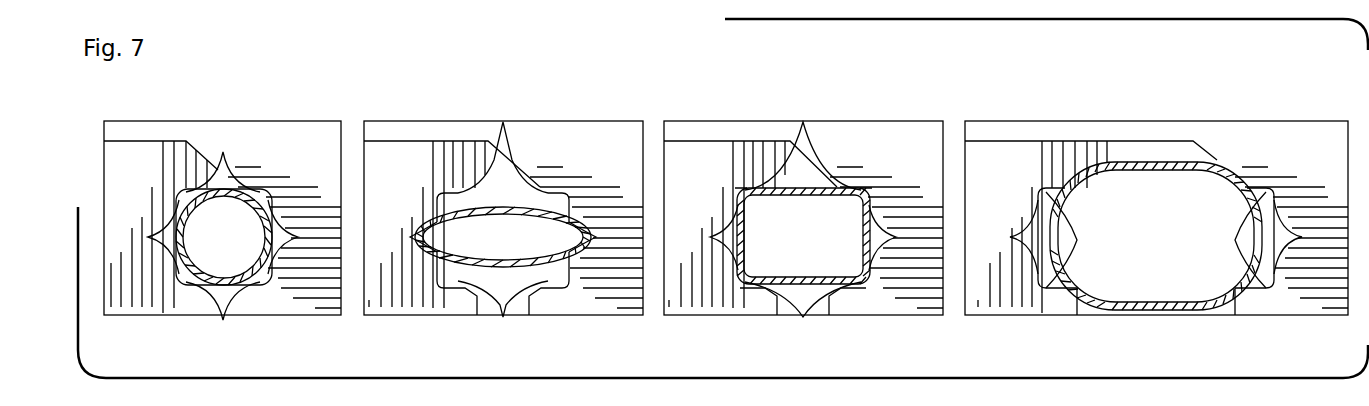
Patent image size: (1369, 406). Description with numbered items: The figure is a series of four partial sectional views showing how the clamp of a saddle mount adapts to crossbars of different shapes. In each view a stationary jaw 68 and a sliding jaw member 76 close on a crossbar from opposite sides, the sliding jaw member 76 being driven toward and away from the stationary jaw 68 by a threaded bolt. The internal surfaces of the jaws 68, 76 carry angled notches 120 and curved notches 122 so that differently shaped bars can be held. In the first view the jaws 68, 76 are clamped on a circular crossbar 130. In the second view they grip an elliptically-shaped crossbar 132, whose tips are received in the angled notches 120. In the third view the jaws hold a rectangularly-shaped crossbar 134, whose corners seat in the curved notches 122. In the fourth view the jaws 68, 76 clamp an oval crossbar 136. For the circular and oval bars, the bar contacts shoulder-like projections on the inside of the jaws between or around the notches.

The stationary jaw 68 is at (316, 148).
The sliding jaw member 76 is at (127, 158).
The angled notches 120 is at (275, 223).
The curved notches 122 is at (223, 156).
The circular crossbar 130 is at (205, 260).
The elliptically-shaped crossbar 132 is at (485, 249).
The rectangularly-shaped crossbar 134 is at (785, 249).
The oval crossbar 136 is at (1135, 212).